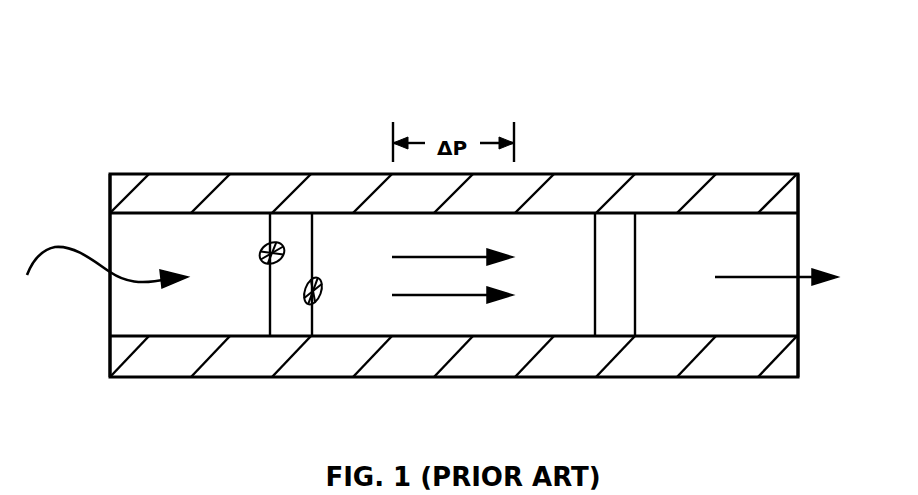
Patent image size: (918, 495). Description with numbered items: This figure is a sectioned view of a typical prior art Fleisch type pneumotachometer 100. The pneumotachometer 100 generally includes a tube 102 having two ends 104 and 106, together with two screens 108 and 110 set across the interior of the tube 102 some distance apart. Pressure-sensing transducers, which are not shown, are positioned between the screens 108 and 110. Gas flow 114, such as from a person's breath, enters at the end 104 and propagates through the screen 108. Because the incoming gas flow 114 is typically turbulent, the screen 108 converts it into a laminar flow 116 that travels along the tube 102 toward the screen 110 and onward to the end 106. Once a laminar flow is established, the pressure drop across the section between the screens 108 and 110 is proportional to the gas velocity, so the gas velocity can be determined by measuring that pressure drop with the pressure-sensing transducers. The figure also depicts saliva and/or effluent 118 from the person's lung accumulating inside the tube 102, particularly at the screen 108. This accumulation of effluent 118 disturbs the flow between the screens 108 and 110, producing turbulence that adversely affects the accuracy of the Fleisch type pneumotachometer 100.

The Fleisch type pneumotachometer 100 is at (175, 58).
The tube 102 is at (595, 186).
The end 104 is at (110, 233).
The end 106 is at (800, 234).
The screen 108 is at (283, 323).
The screen 110 is at (610, 323).
The gas flow 114 is at (77, 265).
The laminar flow 116 is at (401, 242).
The saliva and/or effluent 118 is at (263, 242).